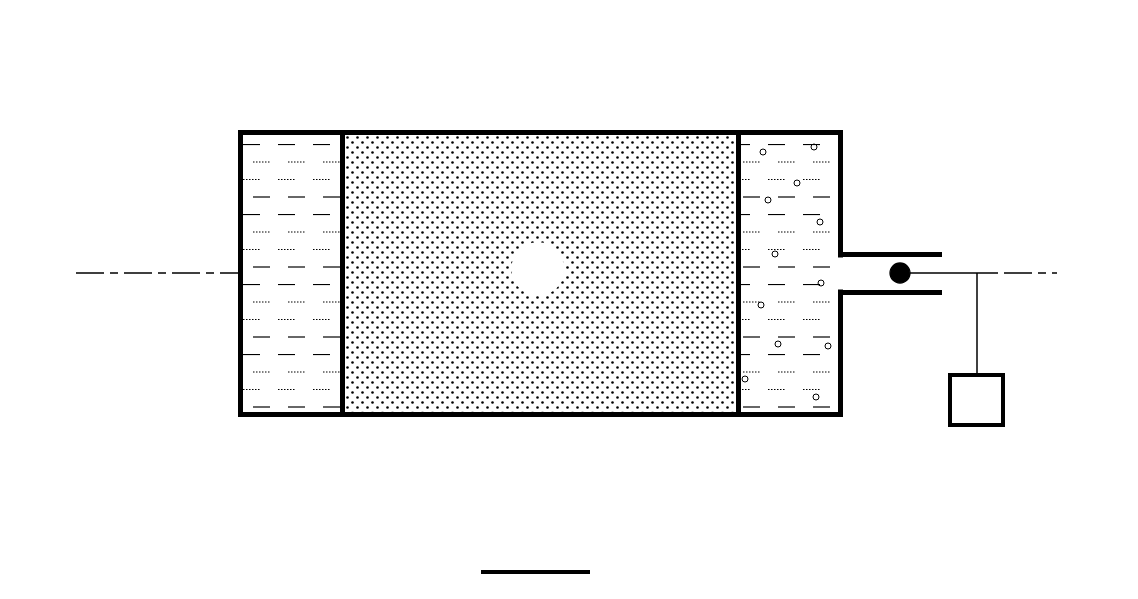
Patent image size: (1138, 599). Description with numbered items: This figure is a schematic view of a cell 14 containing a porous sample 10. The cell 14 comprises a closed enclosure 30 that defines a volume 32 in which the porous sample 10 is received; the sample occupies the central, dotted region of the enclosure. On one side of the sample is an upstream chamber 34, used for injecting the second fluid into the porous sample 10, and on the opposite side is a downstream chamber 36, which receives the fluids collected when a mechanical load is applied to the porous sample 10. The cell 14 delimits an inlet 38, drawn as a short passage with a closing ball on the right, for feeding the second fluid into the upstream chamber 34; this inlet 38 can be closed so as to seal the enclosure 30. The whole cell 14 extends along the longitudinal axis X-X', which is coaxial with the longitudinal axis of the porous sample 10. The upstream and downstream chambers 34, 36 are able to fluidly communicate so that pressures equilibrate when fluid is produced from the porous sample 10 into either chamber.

The cell 14 is at (205, 104).
The closed enclosure 30 is at (425, 130).
The porous sample 10 is at (566, 132).
The volume 32 is at (517, 269).
The downstream chamber 36 is at (286, 185).
The upstream chamber 34 is at (780, 397).
The inlet 38 is at (903, 297).